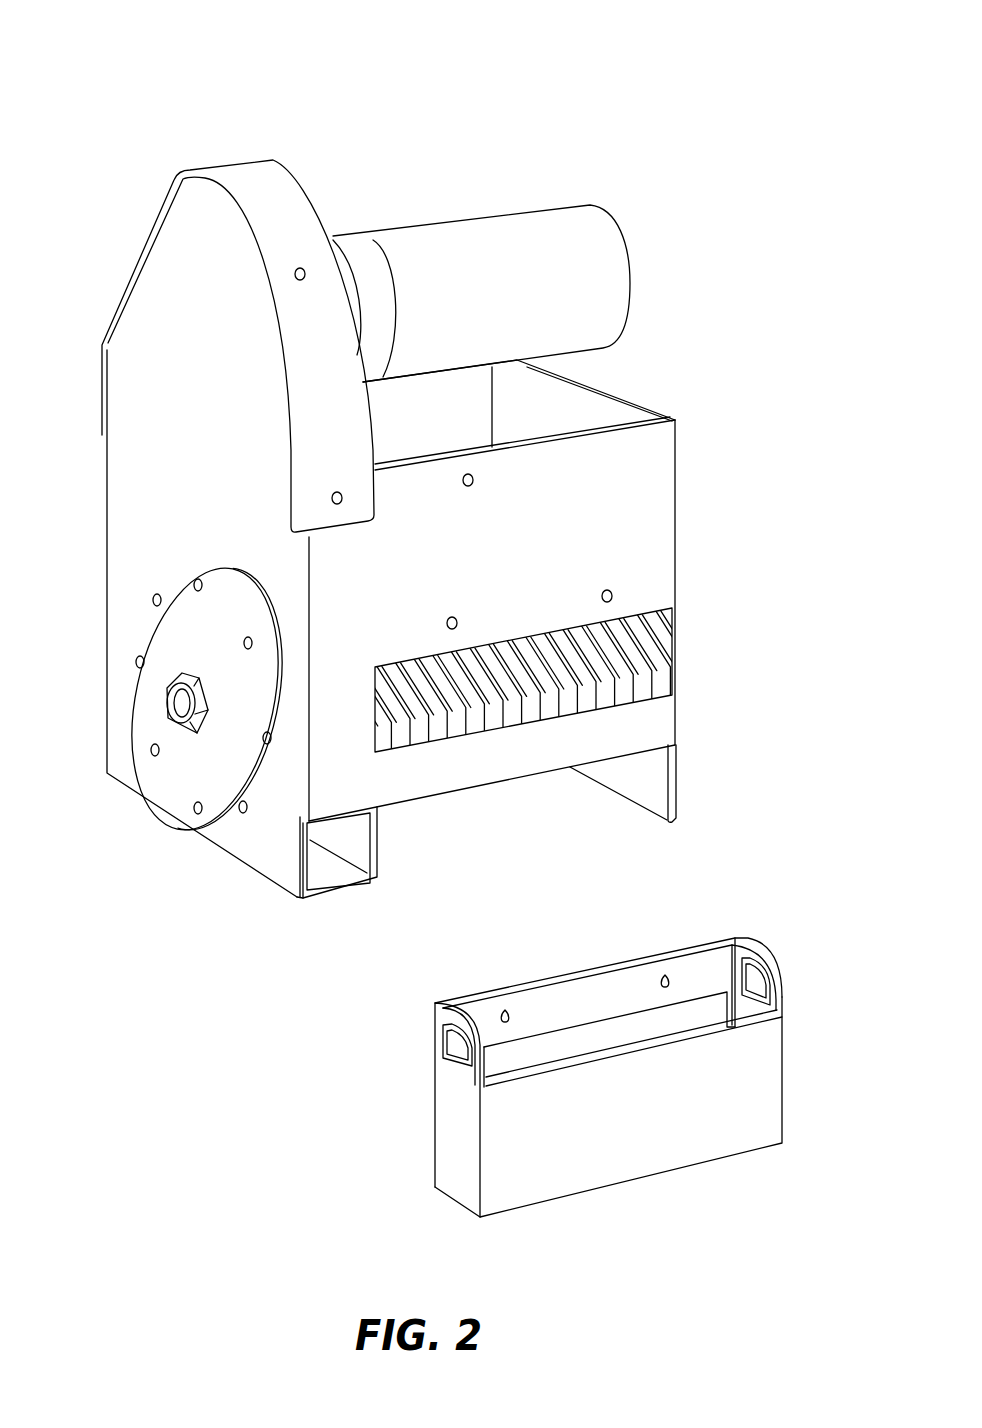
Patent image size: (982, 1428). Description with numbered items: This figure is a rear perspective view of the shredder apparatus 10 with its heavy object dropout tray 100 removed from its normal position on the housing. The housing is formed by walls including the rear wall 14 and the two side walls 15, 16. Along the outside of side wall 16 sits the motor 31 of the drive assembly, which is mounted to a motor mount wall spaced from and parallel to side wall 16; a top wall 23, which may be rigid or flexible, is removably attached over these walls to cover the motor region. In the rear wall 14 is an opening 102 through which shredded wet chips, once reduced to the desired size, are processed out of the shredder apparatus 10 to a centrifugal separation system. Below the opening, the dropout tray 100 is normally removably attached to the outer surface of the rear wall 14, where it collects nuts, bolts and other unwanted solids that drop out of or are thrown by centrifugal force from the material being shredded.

The shredder apparatus 10 is at (548, 82).
The top wall 23 is at (281, 178).
The motor 31 is at (553, 217).
The side wall 15 is at (685, 428).
The rear wall 14 is at (660, 503).
The side wall 16 is at (136, 515).
The opening 102 is at (518, 808).
The dropout tray 100 is at (772, 1068).